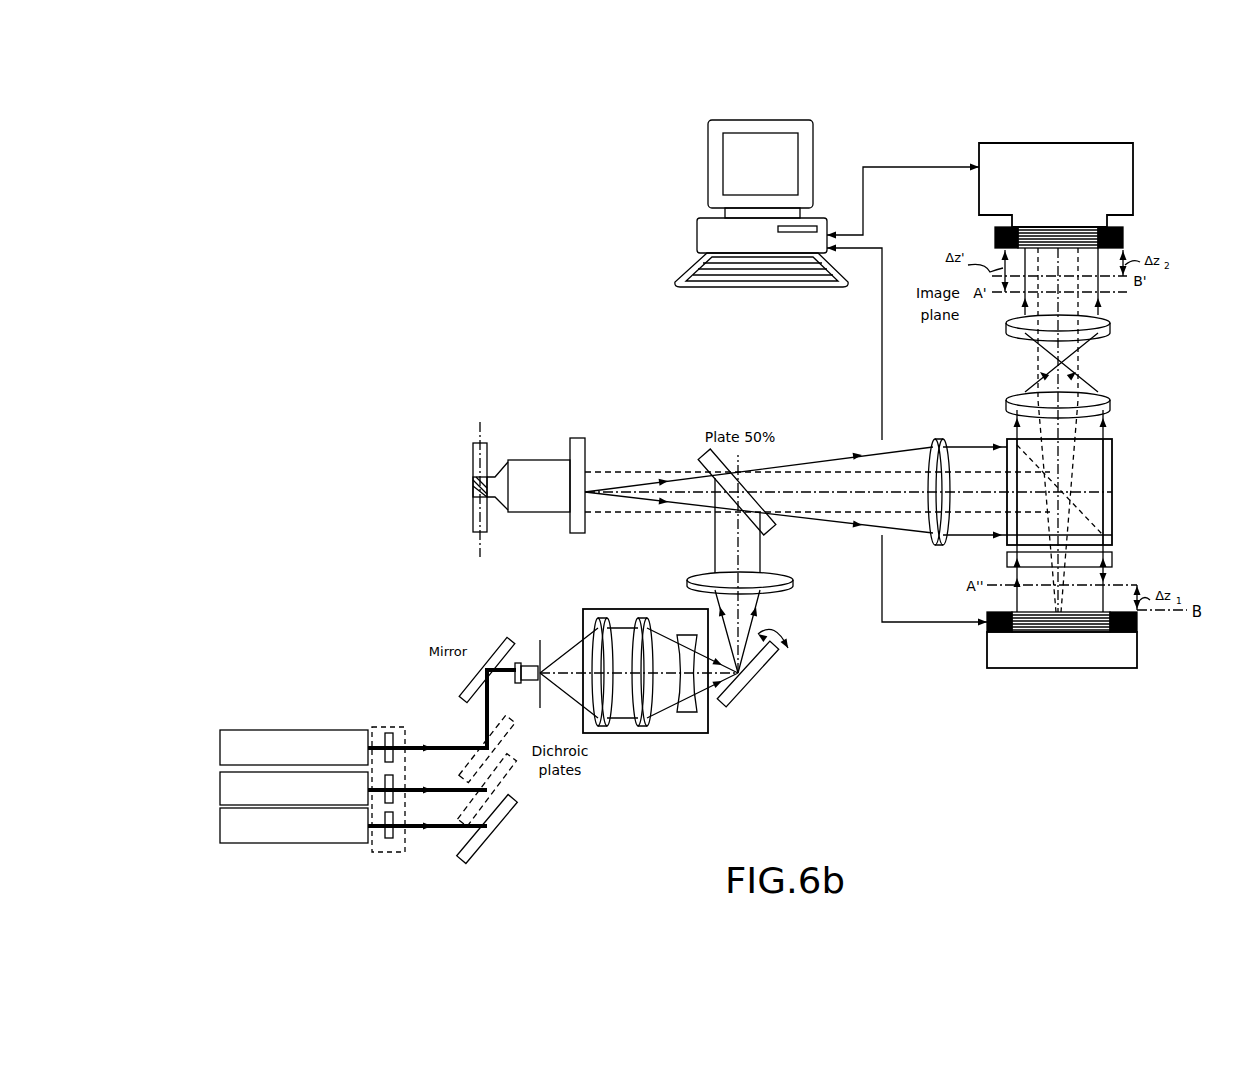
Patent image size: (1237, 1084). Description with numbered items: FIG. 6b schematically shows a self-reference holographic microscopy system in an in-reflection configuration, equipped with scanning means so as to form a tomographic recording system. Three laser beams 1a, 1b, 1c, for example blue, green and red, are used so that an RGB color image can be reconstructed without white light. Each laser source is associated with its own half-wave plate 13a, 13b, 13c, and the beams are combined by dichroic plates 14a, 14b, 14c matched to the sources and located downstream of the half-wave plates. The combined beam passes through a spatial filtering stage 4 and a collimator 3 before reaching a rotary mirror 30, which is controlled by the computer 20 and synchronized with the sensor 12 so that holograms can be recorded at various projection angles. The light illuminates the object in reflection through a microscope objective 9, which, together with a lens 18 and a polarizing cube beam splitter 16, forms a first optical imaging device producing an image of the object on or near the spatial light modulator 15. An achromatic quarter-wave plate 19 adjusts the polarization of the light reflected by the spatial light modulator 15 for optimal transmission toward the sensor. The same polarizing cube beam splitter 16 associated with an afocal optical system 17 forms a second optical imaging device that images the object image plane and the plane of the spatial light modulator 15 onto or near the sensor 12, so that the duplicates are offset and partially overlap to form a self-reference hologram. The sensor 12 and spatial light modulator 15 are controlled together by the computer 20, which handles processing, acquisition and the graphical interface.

The laser beam 1a is at (220, 826).
The laser beam 1b is at (220, 790).
The laser beam 1c is at (220, 742).
The half-wave plate 13a is at (388, 852).
The half-wave plate 13b is at (398, 800).
The half-wave plate 13c is at (392, 733).
The dichroic plate 14a is at (480, 853).
The dichroic plate 14b is at (503, 778).
The dichroic plate 14c is at (502, 712).
The spatial filtering 4 is at (528, 664).
The collimator 3 is at (708, 728).
The rotary mirror 30 is at (740, 705).
The microscope objective 9 is at (527, 512).
The lens 18 is at (935, 548).
The polarizing cube beam splitter 16 is at (1112, 510).
The quarter-wave plate 19 is at (1112, 560).
The spatial light modulator 15 is at (1012, 668).
The afocal optical system 17 is at (1126, 300).
The sensor 12 is at (1133, 195).
The computer 20 is at (697, 235).